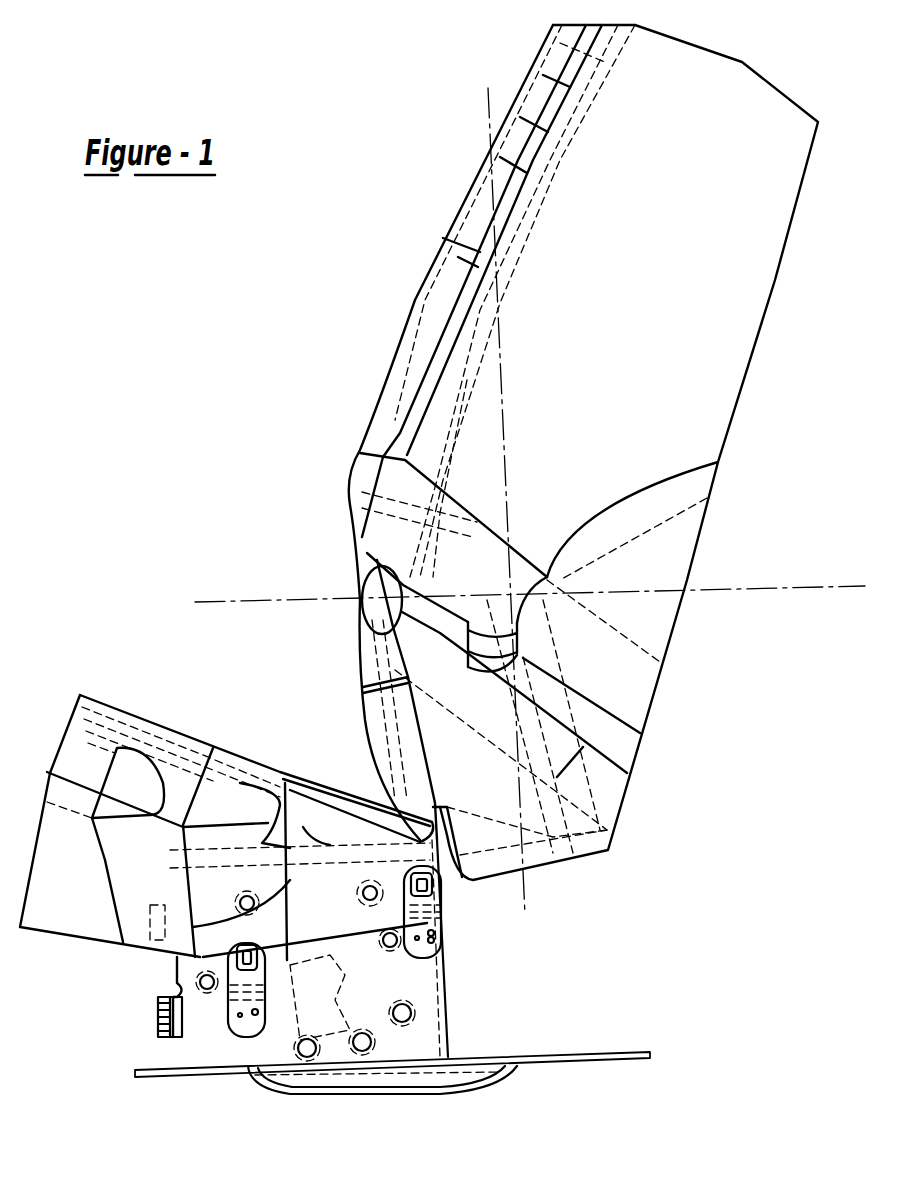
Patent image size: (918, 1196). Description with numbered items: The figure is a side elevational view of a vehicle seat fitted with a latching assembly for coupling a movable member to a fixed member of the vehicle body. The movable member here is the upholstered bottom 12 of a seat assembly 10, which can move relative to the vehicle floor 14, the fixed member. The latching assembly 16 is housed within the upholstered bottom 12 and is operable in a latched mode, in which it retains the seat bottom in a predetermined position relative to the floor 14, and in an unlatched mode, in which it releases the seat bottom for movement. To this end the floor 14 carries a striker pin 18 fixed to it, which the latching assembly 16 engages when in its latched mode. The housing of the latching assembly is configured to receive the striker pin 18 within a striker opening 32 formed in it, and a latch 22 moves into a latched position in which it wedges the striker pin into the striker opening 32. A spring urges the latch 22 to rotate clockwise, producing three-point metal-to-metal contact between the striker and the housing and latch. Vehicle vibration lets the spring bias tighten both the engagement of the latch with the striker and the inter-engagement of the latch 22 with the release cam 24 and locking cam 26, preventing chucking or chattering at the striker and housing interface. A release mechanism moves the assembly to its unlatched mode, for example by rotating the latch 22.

The seat assembly 10 is at (277, 462).
The upholstered bottom 12 is at (170, 722).
The floor 14 is at (552, 1062).
The latching assembly 16 is at (340, 950).
The striker pin 18 is at (360, 1033).
The latch 22 is at (423, 997).
The release cam 24 is at (277, 1002).
The locking cam 26 is at (287, 1032).
The striker opening 32 is at (365, 1042).